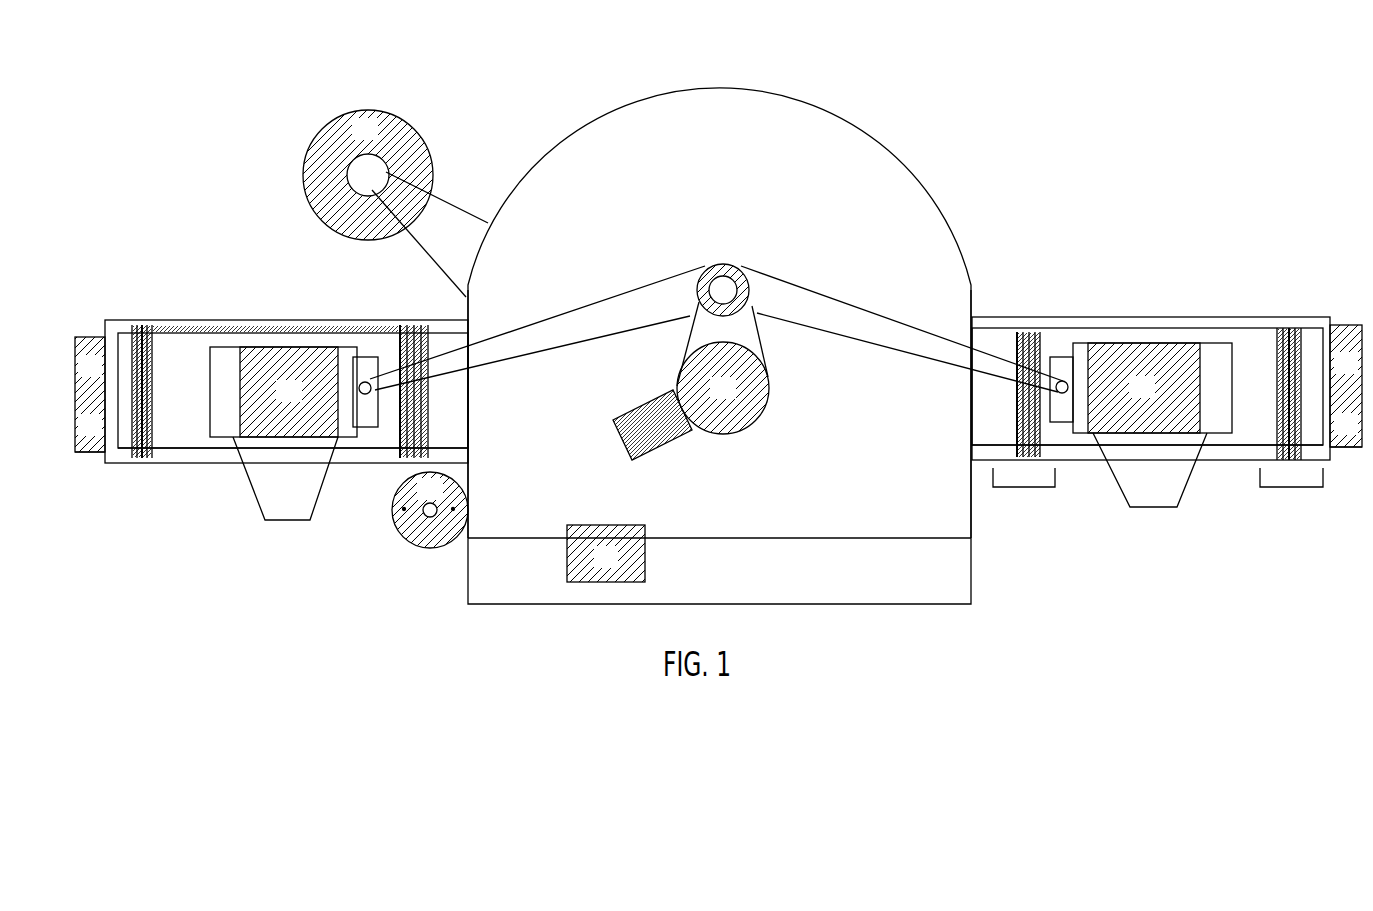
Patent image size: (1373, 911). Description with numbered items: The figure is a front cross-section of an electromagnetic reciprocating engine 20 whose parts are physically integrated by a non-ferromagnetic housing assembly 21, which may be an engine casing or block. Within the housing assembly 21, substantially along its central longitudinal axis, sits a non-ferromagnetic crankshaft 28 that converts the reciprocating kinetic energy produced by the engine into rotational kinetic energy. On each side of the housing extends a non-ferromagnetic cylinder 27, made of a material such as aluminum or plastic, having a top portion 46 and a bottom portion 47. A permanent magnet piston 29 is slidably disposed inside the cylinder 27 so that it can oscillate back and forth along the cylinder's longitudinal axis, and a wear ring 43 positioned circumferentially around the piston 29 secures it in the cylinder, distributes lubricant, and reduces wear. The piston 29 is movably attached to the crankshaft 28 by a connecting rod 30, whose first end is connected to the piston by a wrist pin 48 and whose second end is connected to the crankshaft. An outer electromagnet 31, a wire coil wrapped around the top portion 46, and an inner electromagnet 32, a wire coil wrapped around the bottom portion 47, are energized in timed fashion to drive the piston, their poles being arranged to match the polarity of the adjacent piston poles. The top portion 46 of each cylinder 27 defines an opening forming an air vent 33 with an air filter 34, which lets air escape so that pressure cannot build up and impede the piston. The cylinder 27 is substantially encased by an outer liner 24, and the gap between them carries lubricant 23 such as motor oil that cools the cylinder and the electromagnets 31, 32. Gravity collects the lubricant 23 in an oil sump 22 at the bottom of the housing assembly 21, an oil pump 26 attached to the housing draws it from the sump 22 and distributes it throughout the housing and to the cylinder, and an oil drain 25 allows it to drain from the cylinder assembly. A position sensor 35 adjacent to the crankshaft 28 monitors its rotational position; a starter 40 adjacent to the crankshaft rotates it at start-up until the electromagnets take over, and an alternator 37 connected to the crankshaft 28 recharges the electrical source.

The electromagnetic reciprocating engine 20 is at (1015, 86).
The non-ferromagnetic housing assembly 21 is at (726, 156).
The oil sump 22 is at (497, 606).
The lubricant 23 is at (812, 579).
The outer liner 24 is at (270, 320).
The oil drain 25 is at (473, 462).
The oil pump 26 is at (595, 573).
The non-ferromagnetic cylinder 27 is at (178, 449).
The non-ferromagnetic crankshaft 28 is at (712, 402).
The permanent magnet piston 29 is at (278, 405).
The connecting rod 30 is at (587, 334).
The outer electromagnet 31 is at (141, 322).
The inner electromagnet 32 is at (410, 322).
The air vent 33 is at (718, 388).
The air filter 34 is at (718, 431).
The position sensor 35 is at (630, 420).
The alternator 37 is at (354, 144).
The starter 40 is at (419, 504).
The wear ring 43 is at (276, 511).
The top portion 46 is at (1290, 488).
The bottom portion 47 is at (1023, 488).
The wrist pin 48 is at (1061, 393).